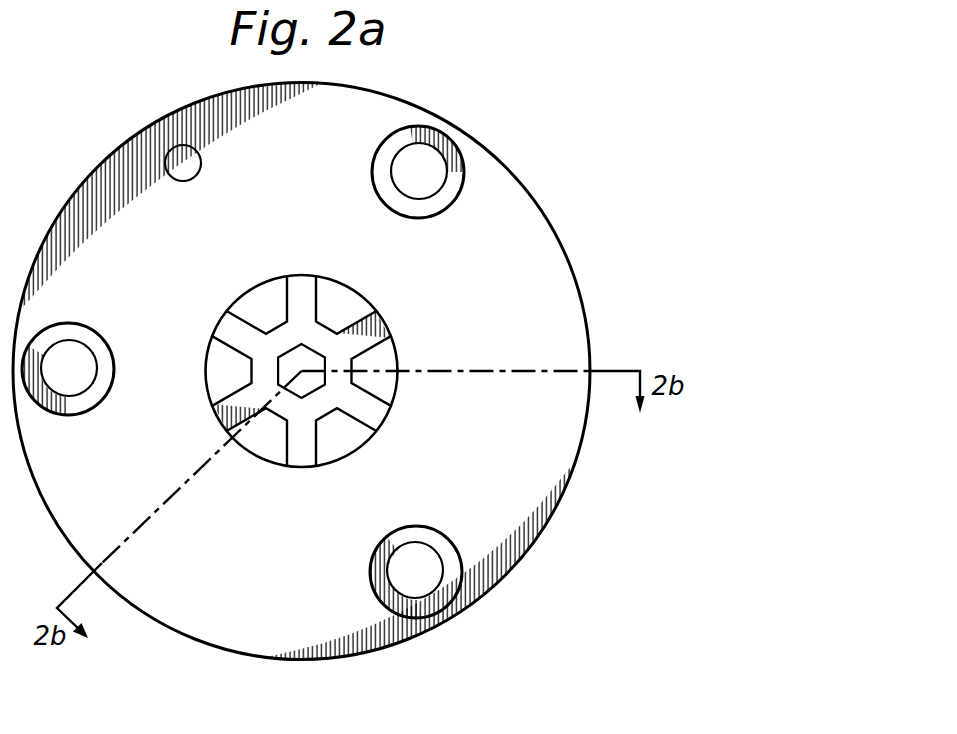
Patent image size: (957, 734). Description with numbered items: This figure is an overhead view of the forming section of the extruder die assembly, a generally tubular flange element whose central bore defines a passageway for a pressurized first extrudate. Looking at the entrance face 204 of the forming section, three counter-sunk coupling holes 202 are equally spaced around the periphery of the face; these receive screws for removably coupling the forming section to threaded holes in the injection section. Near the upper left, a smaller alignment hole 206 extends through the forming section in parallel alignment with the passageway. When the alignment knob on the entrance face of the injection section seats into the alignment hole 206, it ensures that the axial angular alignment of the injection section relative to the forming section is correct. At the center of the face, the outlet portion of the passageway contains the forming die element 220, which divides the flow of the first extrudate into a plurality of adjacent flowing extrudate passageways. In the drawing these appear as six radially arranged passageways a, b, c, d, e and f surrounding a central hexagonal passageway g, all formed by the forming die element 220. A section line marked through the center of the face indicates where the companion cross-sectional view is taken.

The counter-sunk coupling holes 202 is at (428, 176).
The entrance face 204 is at (583, 316).
The alignment hole 206 is at (197, 163).
The forming die element 220 is at (328, 371).
The extrudate passageway a is at (346, 437).
The extrudate passageway b is at (257, 437).
The extrudate passageway c is at (238, 383).
The extrudate passageway d is at (257, 305).
The extrudate passageway e is at (353, 307).
The extrudate passageway f is at (390, 357).
The extrudate passageway g is at (294, 351).